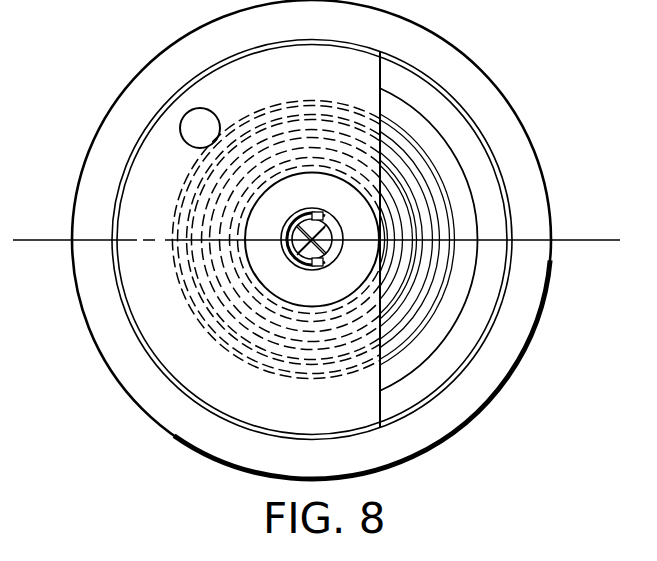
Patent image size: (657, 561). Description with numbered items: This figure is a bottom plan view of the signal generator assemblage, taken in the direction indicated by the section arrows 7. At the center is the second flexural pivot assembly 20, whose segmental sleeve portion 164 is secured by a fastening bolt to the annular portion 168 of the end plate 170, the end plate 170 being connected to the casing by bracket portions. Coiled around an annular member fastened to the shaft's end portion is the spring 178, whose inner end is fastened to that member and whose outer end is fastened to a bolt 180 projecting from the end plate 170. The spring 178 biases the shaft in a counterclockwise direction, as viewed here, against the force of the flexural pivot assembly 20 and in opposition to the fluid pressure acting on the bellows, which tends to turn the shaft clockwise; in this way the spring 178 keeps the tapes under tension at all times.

The section line 7- 7 is at (39, 212).
The second flexural pivot assembly 20 is at (329, 205).
The segmental sleeve portion 164 is at (336, 245).
The annular portion 168 is at (321, 298).
The end plate 170 is at (201, 381).
The spring 178 is at (447, 177).
The bolt 180 is at (193, 118).